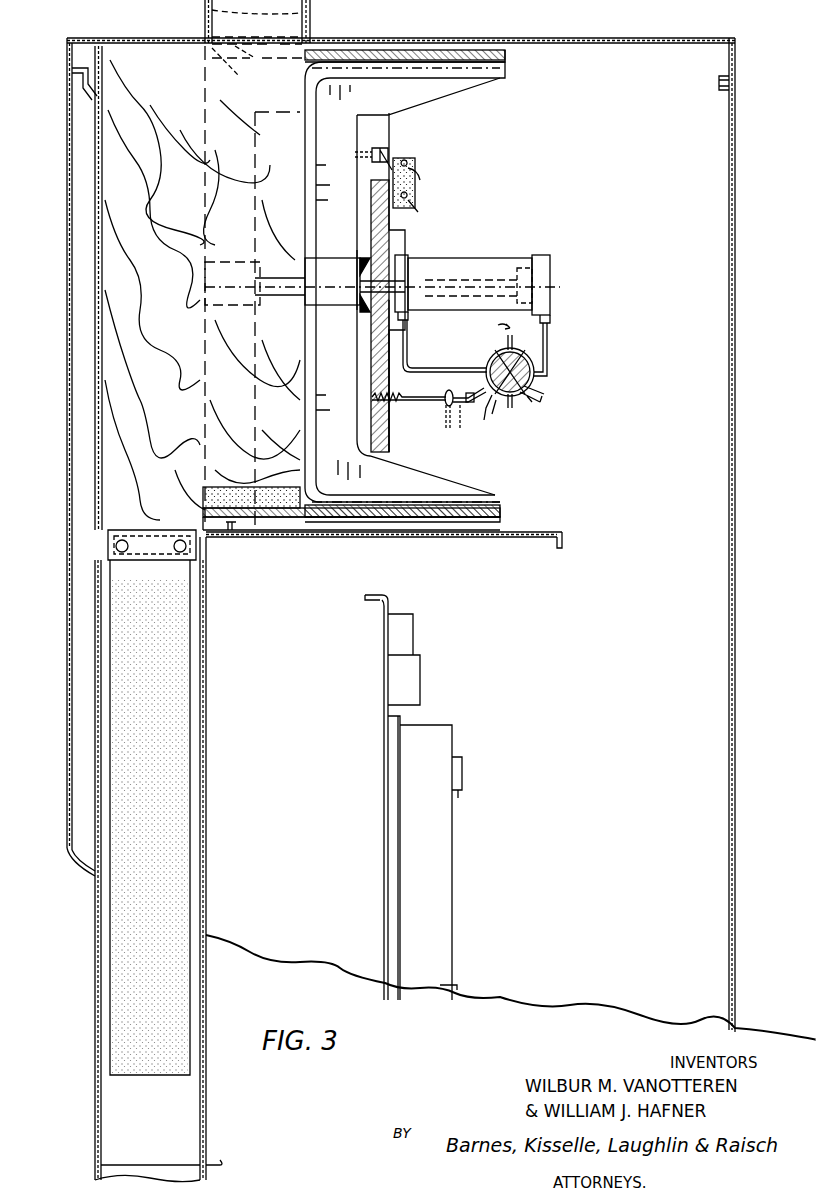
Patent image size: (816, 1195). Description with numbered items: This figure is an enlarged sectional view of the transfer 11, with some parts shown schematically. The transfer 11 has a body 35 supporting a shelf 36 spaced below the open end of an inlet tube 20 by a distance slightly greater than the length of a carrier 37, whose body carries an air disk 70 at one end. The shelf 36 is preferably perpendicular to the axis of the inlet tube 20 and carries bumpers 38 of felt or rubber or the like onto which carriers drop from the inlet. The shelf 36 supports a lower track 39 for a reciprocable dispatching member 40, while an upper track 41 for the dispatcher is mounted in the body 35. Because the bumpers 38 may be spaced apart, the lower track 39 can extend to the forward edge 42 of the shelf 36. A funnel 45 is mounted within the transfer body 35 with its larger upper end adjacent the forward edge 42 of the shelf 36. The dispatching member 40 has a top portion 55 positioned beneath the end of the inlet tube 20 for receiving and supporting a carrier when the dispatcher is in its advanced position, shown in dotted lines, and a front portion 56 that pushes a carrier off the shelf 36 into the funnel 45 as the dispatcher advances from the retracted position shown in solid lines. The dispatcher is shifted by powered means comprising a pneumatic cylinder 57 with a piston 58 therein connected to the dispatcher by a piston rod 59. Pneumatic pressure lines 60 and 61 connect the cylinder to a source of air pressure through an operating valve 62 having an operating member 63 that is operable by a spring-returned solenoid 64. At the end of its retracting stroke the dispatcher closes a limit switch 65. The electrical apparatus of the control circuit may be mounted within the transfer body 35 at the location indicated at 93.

The transfer 11 is at (750, 148).
The inlet tube 20 is at (311, 18).
The body 35 is at (736, 127).
The shelf 36 is at (275, 520).
The carrier 37 is at (199, 57).
The bumper 38 is at (240, 472).
The lower track 39 is at (502, 511).
The dispatching member 40 is at (345, 350).
The upper track 41 is at (507, 65).
The forward edge 42 is at (205, 510).
The funnel 45 is at (94, 638).
The top portion 55 is at (432, 58).
The front portion 56 is at (203, 180).
The pneumatic cylinder 57 is at (488, 262).
The piston 58 is at (552, 266).
The piston rod 59 is at (428, 278).
The pneumatic pressure line 60 is at (407, 352).
The pneumatic pressure line 61 is at (548, 344).
The operating valve 62 is at (536, 378).
The operating member 63 is at (546, 398).
The solenoid 64 is at (444, 394).
The limit switch 65 is at (396, 158).
The air disk 70 is at (208, 16).
The electrical apparatus 93 is at (493, 739).